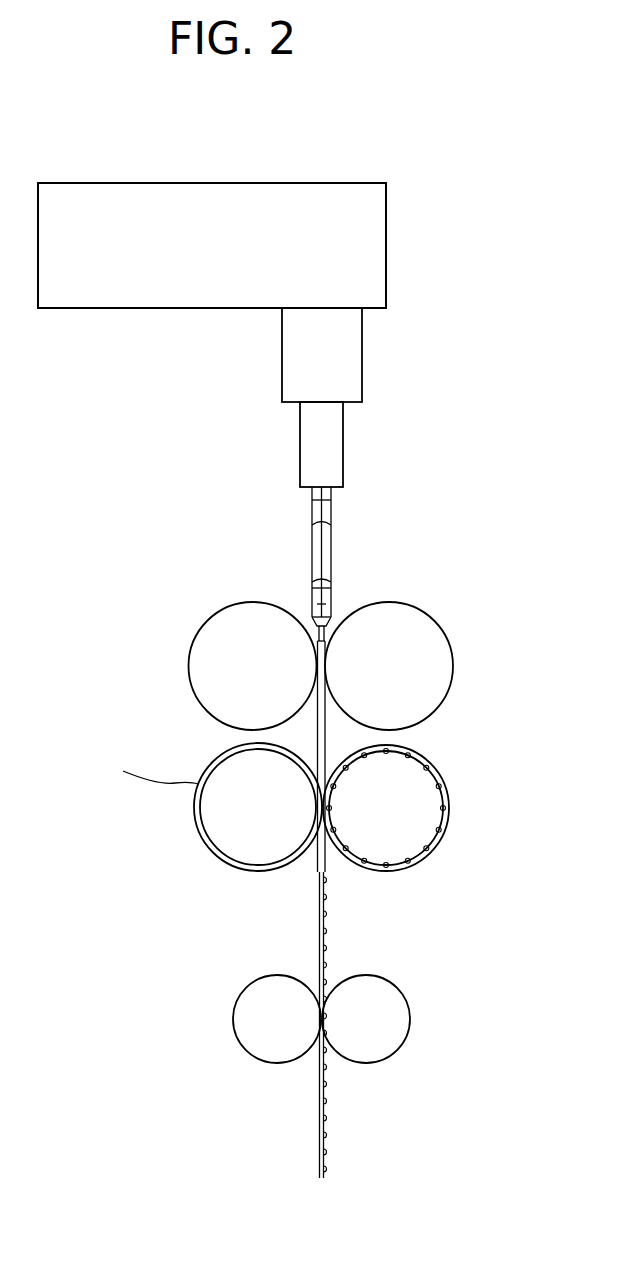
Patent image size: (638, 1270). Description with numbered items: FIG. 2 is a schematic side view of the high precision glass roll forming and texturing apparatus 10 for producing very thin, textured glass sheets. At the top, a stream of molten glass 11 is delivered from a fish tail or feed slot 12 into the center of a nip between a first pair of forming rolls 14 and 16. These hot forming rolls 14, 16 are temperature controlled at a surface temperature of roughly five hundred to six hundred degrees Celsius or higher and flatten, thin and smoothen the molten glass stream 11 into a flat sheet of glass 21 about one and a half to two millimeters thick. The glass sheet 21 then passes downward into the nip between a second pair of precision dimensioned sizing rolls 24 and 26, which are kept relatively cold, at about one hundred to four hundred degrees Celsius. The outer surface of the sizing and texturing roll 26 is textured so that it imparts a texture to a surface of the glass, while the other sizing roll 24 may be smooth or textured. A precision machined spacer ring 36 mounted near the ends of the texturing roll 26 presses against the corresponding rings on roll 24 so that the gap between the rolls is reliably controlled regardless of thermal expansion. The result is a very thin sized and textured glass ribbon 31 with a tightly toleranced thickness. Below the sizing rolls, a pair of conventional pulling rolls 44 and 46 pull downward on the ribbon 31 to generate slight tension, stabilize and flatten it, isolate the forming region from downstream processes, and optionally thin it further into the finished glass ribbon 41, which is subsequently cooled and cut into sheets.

The high precision glass roll forming apparatus 10 is at (449, 370).
The stream of molten glass 11 is at (332, 625).
The feed slot 12 is at (326, 546).
The forming roll 14 is at (208, 672).
The forming roll 16 is at (431, 647).
The flat sheet of glass 21 is at (326, 739).
The sizing roll 24 is at (213, 809).
The sizing and texturing roll 26 is at (405, 823).
The sized and textured glass ribbon 31 is at (327, 908).
The spacer ring 36 is at (444, 784).
The glass ribbon 41 is at (325, 1177).
The pulling roll 44 is at (250, 1016).
The pulling roll 46 is at (392, 1021).